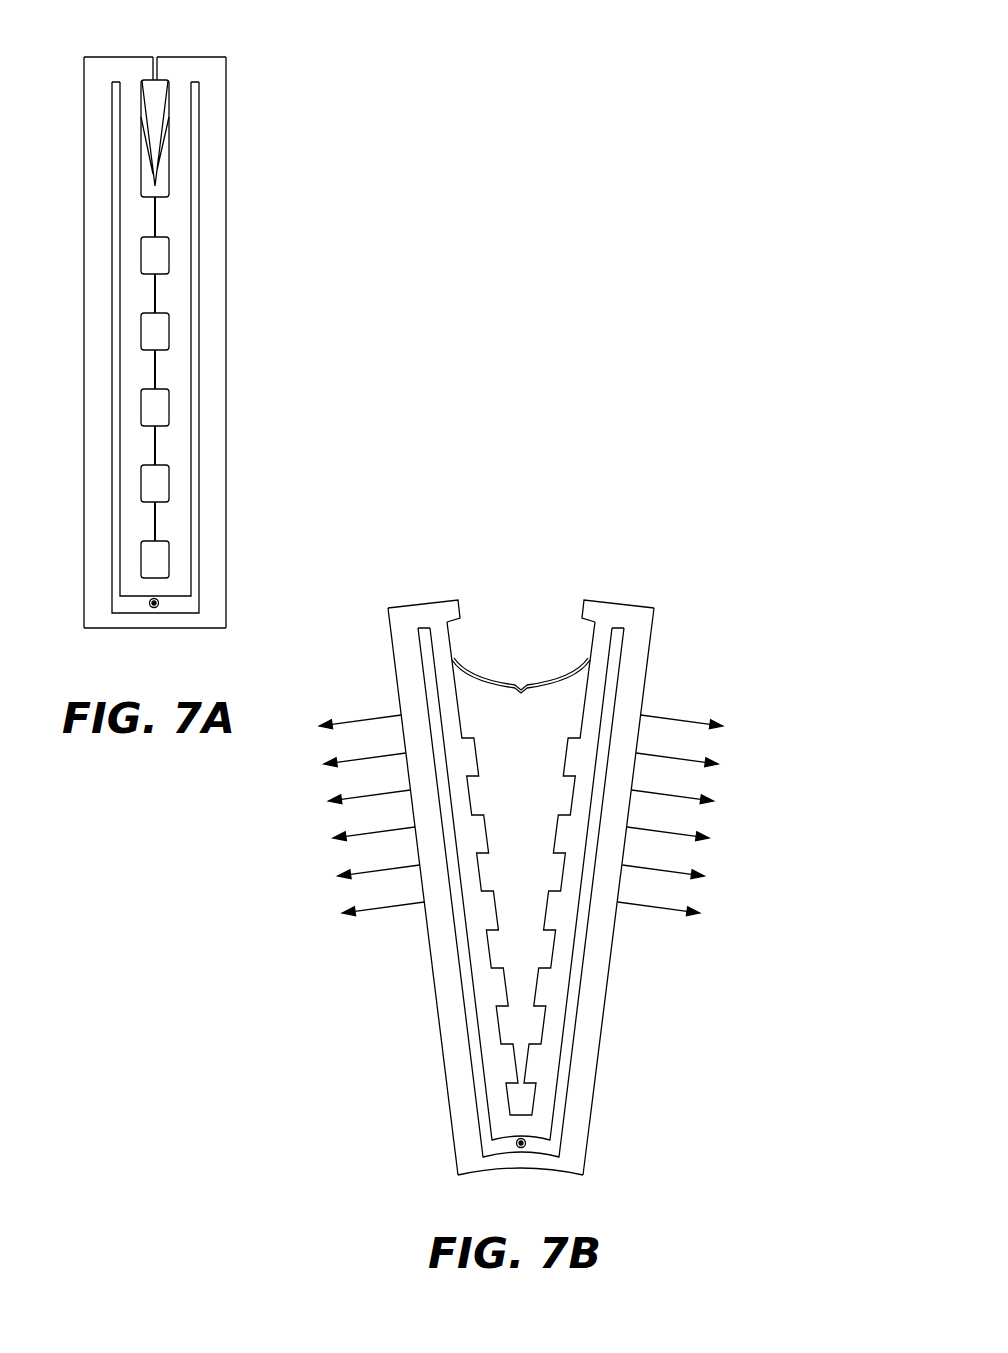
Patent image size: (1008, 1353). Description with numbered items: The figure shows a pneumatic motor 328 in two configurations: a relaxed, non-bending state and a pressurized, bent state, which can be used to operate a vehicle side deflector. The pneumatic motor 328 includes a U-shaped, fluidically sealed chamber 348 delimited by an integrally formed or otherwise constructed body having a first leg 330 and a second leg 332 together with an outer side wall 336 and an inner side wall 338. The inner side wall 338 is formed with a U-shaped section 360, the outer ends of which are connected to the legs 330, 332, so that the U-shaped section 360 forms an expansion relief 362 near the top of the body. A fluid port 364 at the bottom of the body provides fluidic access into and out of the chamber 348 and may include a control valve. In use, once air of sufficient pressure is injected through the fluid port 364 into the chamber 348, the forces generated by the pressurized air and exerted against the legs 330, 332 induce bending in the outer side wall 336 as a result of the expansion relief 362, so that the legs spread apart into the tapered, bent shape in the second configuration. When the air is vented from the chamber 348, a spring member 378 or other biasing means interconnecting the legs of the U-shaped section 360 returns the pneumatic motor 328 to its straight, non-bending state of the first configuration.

In FIG. 7A, the pneumatic motor 328 is at (167, 336).
In FIG. 7B, the pneumatic motor 328 is at (521, 861).
In FIG. 7A, the leg 330 is at (88, 412).
In FIG. 7B, the leg 330 is at (441, 1020).
In FIG. 7A, the leg 332 is at (222, 440).
In FIG. 7B, the leg 332 is at (606, 1003).
In FIG. 7A, the outer side wall 336 is at (135, 628).
In FIG. 7B, the outer side wall 336 is at (512, 1172).
In FIG. 7A, the inner side wall 338 is at (185, 57).
In FIG. 7A, the chamber 348 is at (117, 489).
In FIG. 7B, the chamber 348 is at (475, 1058).
In FIG. 7A, the U-shaped section 360 is at (137, 157).
In FIG. 7B, the U-shaped section 360 is at (450, 683).
In FIG. 7A, the expansion relief 362 is at (153, 103).
In FIG. 7B, the expansion relief 362 is at (553, 663).
In FIG. 7A, the fluid port 364 is at (156, 608).
In FIG. 7B, the fluid port 364 is at (523, 1148).
In FIG. 7A, the spring member 378 is at (158, 164).
In FIG. 7B, the spring member 378 is at (487, 677).